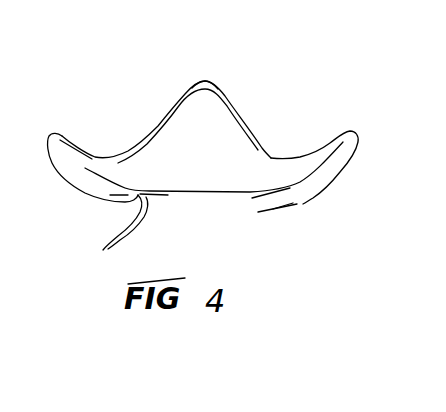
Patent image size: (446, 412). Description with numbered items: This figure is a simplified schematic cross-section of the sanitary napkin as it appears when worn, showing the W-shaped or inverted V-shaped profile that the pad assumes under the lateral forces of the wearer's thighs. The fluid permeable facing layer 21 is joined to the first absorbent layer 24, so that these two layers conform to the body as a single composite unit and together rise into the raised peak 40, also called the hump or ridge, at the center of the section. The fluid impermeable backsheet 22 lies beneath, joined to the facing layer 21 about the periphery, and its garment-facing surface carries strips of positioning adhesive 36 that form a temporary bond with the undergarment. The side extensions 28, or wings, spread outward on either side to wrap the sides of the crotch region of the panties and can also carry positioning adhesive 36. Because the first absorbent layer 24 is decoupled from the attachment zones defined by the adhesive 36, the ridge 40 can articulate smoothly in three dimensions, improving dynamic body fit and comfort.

The fluid permeable facing layer 21 is at (238, 108).
The fluid impermeable backsheet 22 is at (193, 193).
The first absorbent layer 24 is at (174, 114).
The side extensions 28 is at (89, 199).
The positioning adhesive 36 is at (119, 234).
The raised peak 40 is at (216, 82).